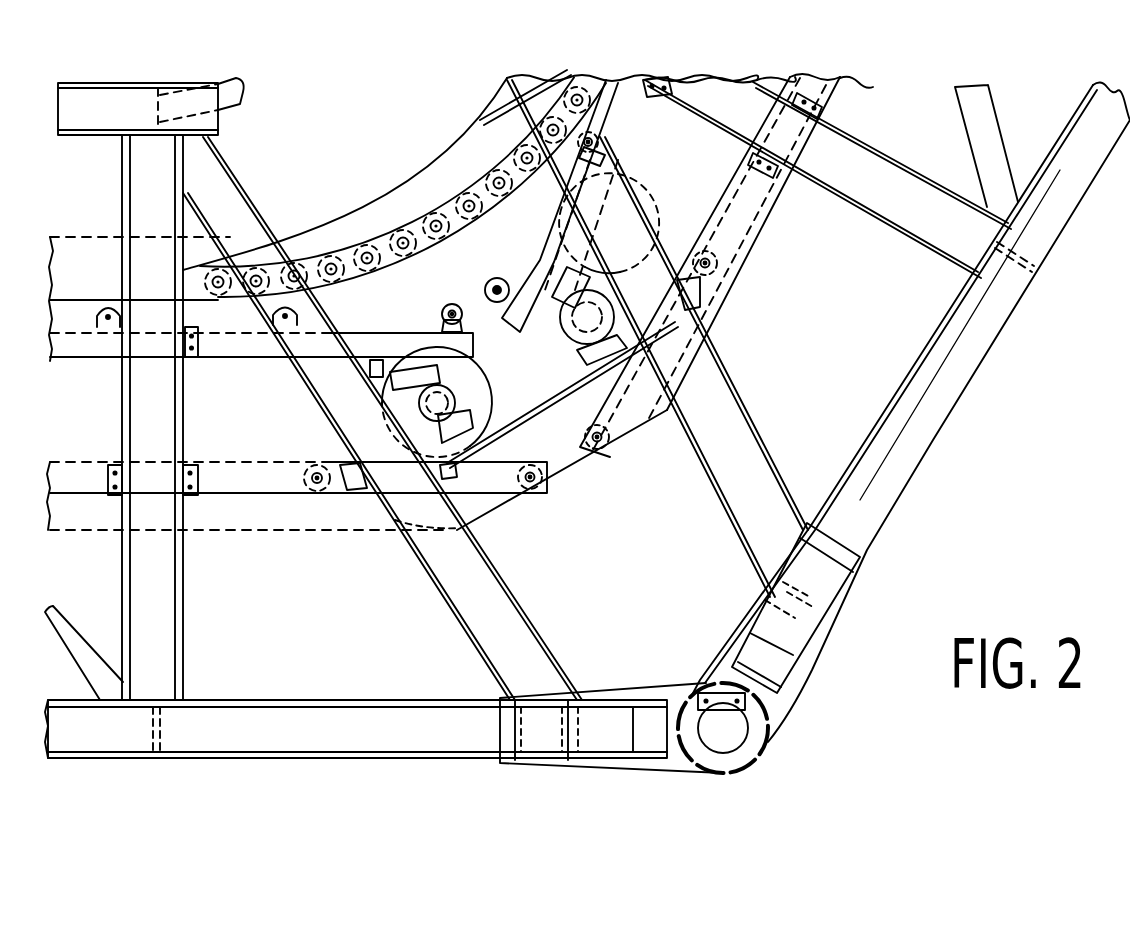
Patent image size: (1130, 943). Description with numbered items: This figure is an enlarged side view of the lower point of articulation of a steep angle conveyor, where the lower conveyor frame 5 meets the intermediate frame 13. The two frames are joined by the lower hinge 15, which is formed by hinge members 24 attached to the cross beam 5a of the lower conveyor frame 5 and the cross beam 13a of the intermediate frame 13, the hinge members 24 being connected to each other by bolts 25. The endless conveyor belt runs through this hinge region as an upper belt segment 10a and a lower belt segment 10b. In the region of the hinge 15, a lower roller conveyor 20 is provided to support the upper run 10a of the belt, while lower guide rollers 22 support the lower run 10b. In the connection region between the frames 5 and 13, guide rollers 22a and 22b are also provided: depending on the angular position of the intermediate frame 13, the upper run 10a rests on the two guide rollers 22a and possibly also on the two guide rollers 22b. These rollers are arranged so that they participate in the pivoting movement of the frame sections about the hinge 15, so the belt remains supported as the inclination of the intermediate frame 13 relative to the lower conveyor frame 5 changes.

The lower conveyor frame 5 is at (257, 777).
The cross beam 5a is at (373, 743).
The upper belt segment 10a is at (437, 240).
The lower belt segment 10b is at (543, 412).
The intermediate frame 13 is at (982, 395).
The cross beam 13a is at (887, 480).
The lower hinge 15 is at (787, 758).
The lower roller conveyor 20 is at (413, 227).
The lower guide rollers 22 is at (472, 378).
The guide rollers 22a is at (285, 327).
The guide rollers 22b is at (497, 287).
The hinge members 24 is at (788, 683).
The bolts 25 is at (725, 735).